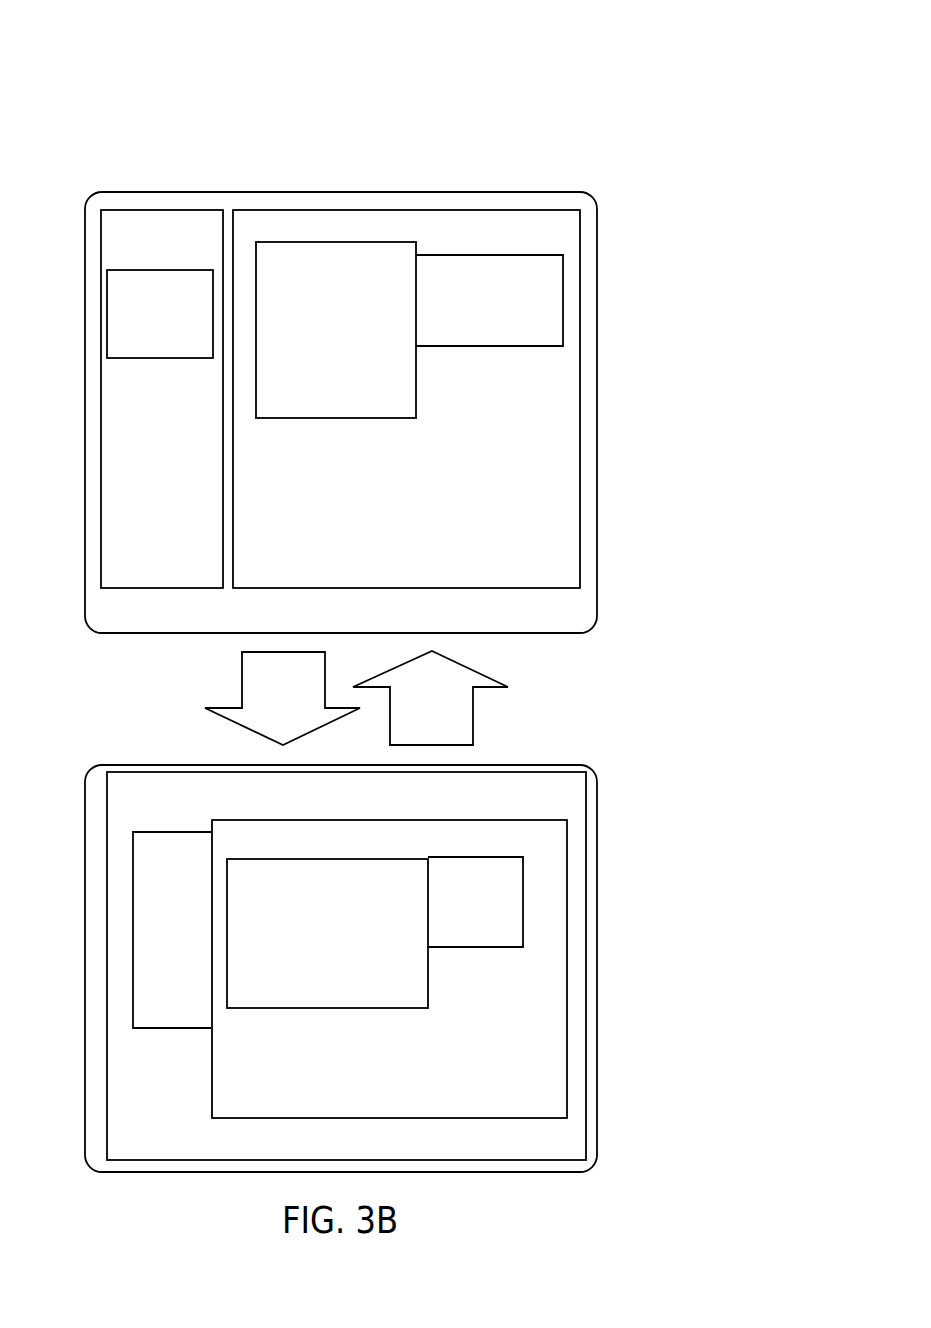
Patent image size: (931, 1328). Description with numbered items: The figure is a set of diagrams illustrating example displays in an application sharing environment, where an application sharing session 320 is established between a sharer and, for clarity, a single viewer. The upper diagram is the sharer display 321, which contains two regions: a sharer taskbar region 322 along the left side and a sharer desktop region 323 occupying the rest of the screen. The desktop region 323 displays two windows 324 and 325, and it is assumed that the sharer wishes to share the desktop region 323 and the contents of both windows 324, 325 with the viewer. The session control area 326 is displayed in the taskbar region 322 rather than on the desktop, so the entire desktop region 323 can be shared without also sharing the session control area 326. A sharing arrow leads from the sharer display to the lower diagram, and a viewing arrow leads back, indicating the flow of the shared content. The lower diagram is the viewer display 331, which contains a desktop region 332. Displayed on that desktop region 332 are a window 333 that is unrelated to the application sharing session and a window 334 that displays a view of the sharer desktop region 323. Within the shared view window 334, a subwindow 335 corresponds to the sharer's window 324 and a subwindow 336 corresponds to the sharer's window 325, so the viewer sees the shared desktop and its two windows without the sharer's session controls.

The application sharing session 320 is at (110, 79).
The sharer display 321 is at (83, 300).
The sharer taskbar region 322 is at (108, 213).
The sharer desktop region 323 is at (247, 213).
The window 324 is at (397, 240).
The window 325 is at (493, 253).
The session control area 326 is at (150, 360).
The viewer display 331 is at (83, 822).
The desktop region 332 is at (107, 937).
The window 333 is at (133, 1002).
The window 334 is at (533, 820).
The subwindow 335 is at (373, 858).
The subwindow 336 is at (523, 902).